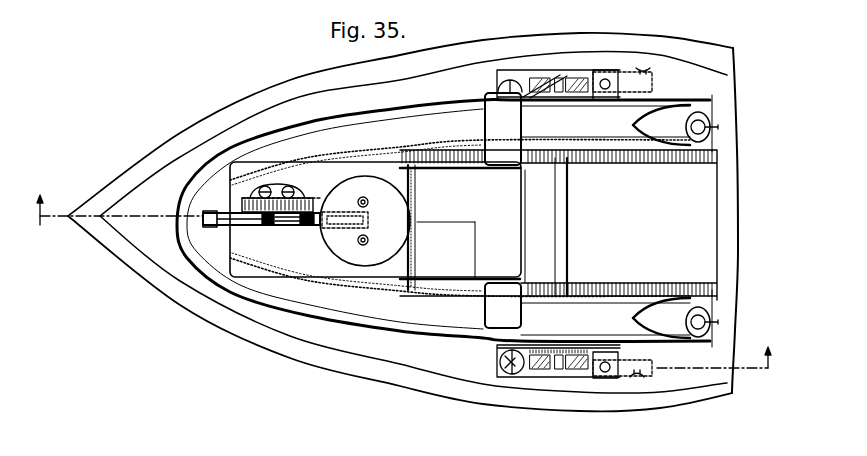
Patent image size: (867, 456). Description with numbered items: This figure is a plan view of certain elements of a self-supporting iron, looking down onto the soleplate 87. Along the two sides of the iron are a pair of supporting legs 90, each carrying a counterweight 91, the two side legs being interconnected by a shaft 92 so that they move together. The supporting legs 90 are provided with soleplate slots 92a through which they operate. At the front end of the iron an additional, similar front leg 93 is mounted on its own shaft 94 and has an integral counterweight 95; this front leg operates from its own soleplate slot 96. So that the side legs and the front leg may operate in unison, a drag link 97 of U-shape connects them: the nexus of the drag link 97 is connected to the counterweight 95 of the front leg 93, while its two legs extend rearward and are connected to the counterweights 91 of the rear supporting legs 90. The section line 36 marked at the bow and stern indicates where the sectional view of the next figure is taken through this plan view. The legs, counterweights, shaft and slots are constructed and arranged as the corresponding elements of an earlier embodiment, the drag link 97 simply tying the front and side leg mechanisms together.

The section line 36— 36 is at (405, 293).
The soleplate 87 is at (486, 46).
The supporting legs 90 is at (655, 80).
The counterweights 91 is at (484, 126).
The shaft 92 is at (567, 222).
The soleplate slots 92a is at (641, 66).
The front leg 93 is at (310, 228).
The shaft 94 is at (293, 206).
The counterweight 95 is at (213, 228).
The soleplate slot 96 is at (348, 230).
The drag link 97 is at (470, 171).